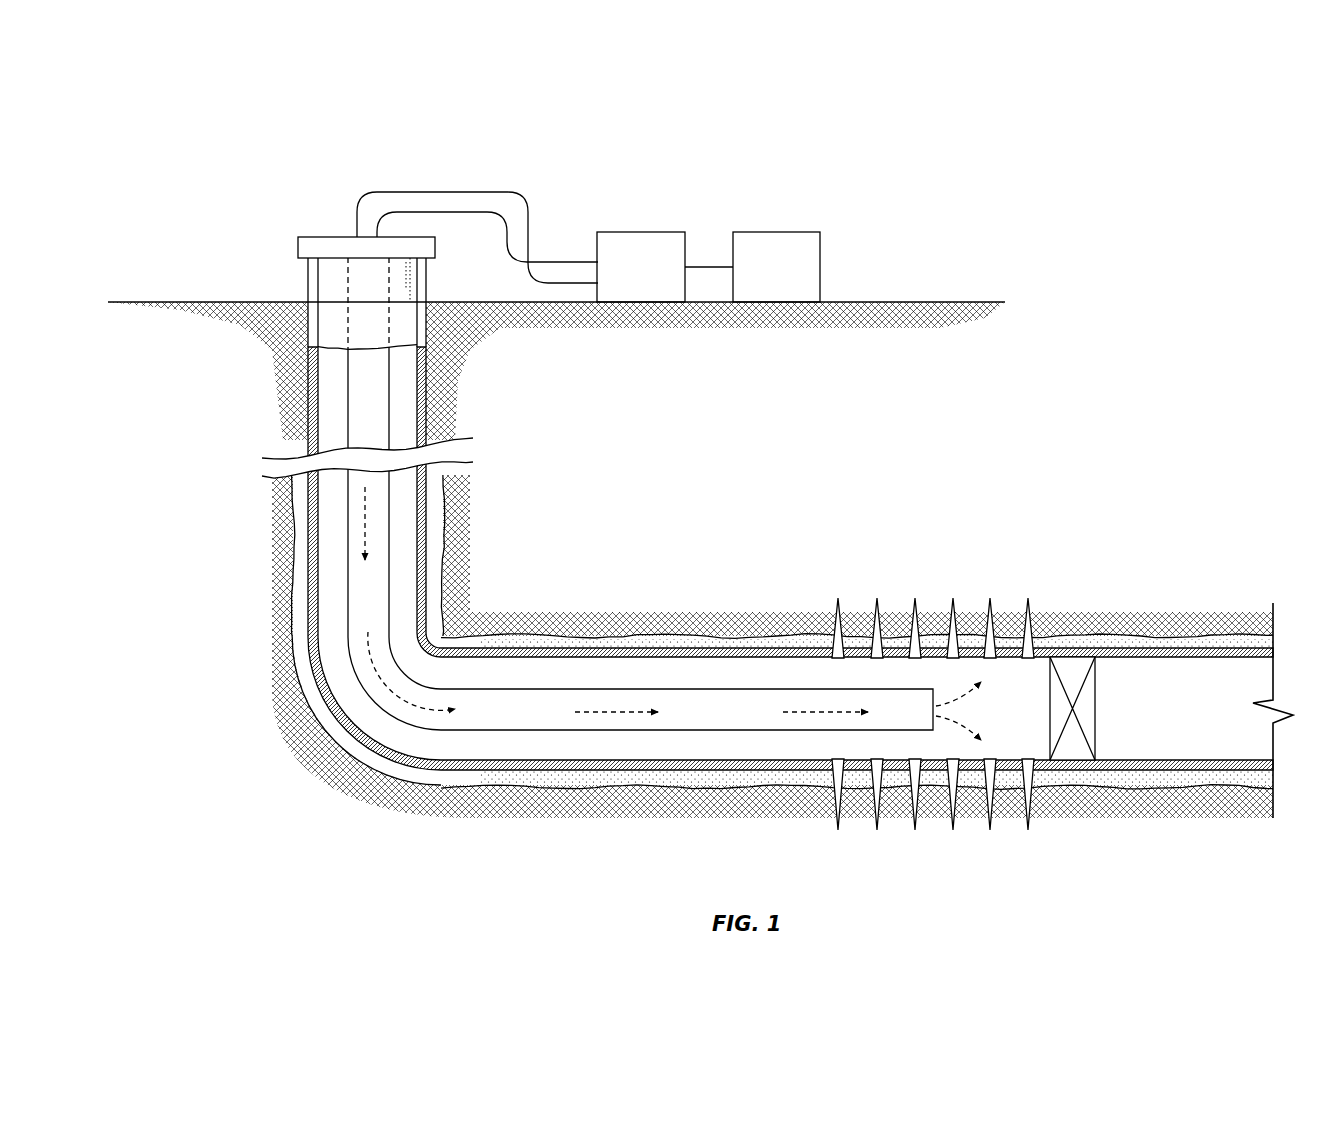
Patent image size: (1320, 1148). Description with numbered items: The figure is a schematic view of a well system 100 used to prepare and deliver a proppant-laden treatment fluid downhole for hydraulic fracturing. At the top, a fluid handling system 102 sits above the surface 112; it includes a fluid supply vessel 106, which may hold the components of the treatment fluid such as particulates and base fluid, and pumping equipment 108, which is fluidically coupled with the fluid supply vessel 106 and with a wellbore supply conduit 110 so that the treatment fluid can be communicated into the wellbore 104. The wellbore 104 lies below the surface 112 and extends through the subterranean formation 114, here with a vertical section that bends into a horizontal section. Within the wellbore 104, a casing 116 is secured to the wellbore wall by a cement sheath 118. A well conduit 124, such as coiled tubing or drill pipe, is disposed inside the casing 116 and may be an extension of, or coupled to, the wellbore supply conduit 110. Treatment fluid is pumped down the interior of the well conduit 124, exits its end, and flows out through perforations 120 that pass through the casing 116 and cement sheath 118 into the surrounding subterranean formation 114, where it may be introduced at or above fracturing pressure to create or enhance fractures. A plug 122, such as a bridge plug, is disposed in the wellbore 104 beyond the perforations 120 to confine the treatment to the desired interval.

The well system 100 is at (306, 106).
The fluid handling system 102 is at (731, 223).
The wellbore 104 is at (445, 517).
The fluid supply vessel 106 is at (800, 232).
The pumping equipment 108 is at (663, 232).
The wellbore supply conduit 110 is at (442, 190).
The surface 112 is at (870, 302).
The subterranean formation 114 is at (556, 394).
The casing 116 is at (607, 647).
The cement sheath 118 is at (693, 640).
The perforations 120 is at (1033, 594).
The plug 122 is at (1072, 668).
The well conduit 124 is at (492, 688).